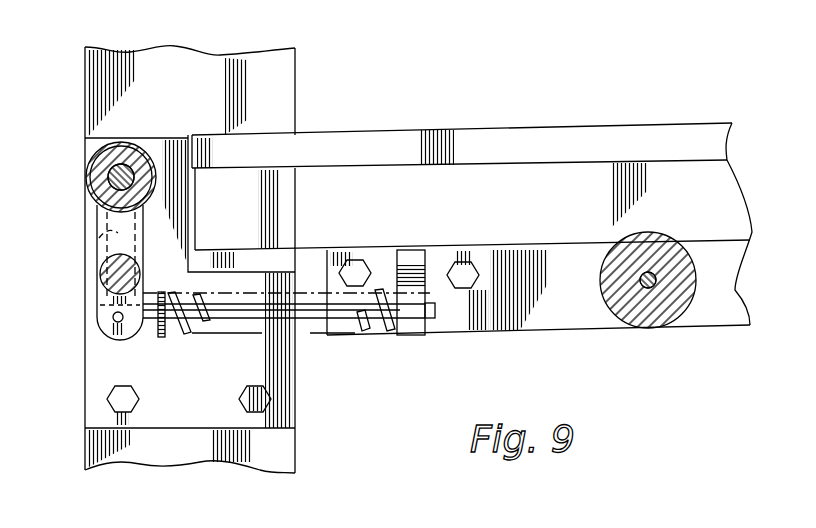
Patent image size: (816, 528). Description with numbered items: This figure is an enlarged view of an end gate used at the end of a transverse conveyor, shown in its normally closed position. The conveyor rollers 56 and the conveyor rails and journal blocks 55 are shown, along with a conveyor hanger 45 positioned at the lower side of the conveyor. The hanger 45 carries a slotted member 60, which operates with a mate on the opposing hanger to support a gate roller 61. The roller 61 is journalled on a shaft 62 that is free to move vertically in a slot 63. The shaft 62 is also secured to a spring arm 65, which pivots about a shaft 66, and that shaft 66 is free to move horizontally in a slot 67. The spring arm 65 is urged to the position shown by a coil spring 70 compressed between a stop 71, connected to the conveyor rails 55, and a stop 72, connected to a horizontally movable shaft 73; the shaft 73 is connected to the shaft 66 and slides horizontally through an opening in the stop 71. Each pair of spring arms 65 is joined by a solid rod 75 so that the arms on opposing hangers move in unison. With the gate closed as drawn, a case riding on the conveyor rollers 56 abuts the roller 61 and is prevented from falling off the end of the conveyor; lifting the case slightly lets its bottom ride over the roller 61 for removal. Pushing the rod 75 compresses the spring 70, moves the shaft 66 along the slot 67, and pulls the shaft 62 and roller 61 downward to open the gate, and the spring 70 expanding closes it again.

The conveyor hanger 45 is at (280, 457).
The conveyor rails and journal blocks 55 is at (540, 234).
The conveyor roller 56 is at (650, 312).
The slotted member 60 is at (284, 401).
The gate roller 61 is at (90, 180).
The shaft 62 is at (110, 170).
The slot 63 is at (97, 238).
The spring arm 65 is at (100, 307).
The shaft 66 is at (116, 318).
The slot 67 is at (240, 320).
The coil spring 70 is at (180, 334).
The stop 71 is at (417, 322).
The stop 72 is at (157, 336).
The horizontally movable shaft 73 is at (312, 325).
The solid rod 75 is at (103, 270).